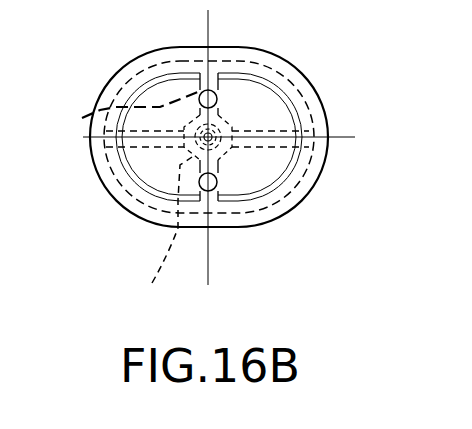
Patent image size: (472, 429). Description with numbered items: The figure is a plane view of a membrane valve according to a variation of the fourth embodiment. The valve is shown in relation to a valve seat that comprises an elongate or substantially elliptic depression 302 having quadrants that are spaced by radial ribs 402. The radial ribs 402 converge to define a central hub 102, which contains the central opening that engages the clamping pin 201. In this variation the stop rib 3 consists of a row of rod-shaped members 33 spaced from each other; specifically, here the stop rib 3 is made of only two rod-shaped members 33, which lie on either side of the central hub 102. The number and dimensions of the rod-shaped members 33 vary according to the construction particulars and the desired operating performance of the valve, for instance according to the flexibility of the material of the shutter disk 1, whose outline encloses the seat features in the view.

The shutter disk 1 is at (274, 55).
The stop rib 3 is at (208, 198).
The rod-shaped members 33 is at (217, 99).
The central hub 102 is at (159, 237).
The clamping pin 201 is at (220, 137).
The elongate or substantially elliptic depression 302 is at (304, 182).
The radial ribs 402 is at (125, 236).